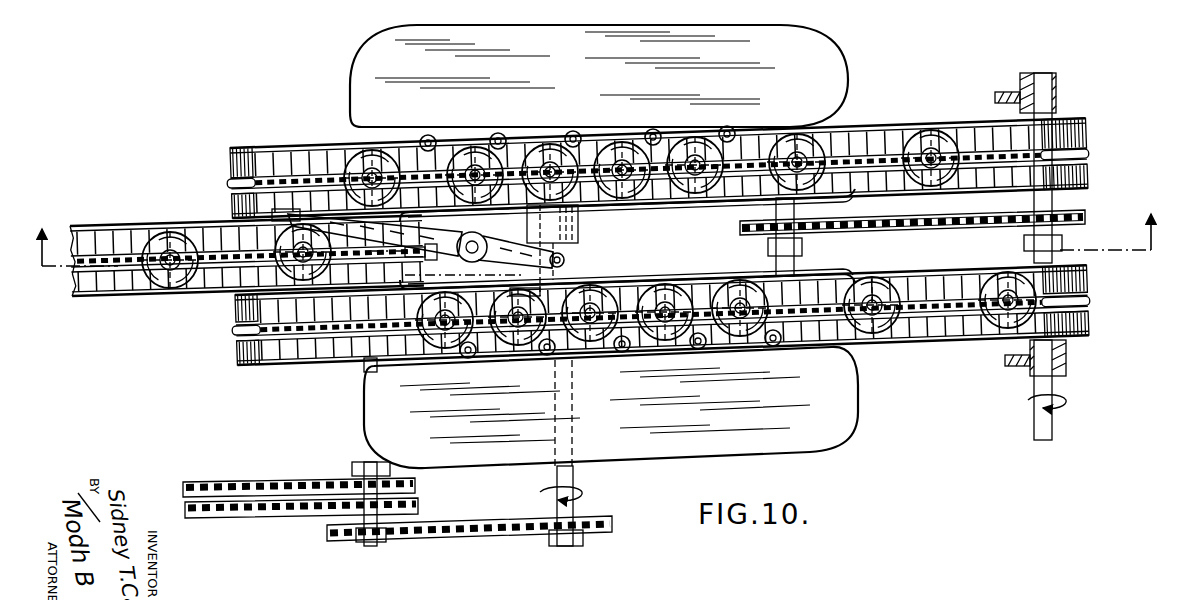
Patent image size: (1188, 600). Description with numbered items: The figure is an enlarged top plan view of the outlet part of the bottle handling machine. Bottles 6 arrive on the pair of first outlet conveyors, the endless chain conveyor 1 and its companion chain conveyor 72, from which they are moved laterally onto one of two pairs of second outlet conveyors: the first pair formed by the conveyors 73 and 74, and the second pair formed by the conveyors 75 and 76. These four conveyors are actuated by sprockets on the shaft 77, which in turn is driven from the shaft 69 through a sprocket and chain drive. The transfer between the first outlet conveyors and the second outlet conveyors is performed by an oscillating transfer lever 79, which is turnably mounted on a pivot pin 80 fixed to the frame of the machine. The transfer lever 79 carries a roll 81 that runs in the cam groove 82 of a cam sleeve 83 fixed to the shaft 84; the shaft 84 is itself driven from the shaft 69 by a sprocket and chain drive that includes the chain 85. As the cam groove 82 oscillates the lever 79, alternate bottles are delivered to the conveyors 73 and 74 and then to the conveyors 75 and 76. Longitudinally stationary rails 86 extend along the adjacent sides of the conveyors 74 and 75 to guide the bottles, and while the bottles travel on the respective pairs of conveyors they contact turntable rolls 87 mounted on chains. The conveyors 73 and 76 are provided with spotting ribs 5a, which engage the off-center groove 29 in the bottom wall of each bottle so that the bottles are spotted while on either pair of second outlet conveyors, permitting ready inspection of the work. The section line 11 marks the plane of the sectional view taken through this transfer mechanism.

The endless chain conveyor 1 is at (98, 230).
The spotting ribs 5a is at (228, 183).
The bottles 6 is at (885, 326).
The section line 11 is at (53, 221).
The groove 29 is at (584, 239).
The shaft 69 is at (370, 546).
The chain conveyor 72 is at (73, 284).
The outlet conveyor 73 is at (240, 147).
The outlet conveyor 74 is at (249, 204).
The outlet conveyor 75 is at (233, 306).
The outlet conveyor 76 is at (233, 348).
The shaft 77 is at (1053, 212).
The oscillating transfer lever 79 is at (291, 156).
The pivot pin 80 is at (478, 243).
The roll 81 is at (566, 262).
The cam groove 82 is at (580, 248).
The cam sleeve 83 is at (583, 225).
The shaft 84 is at (577, 500).
The chain 85 is at (452, 521).
The longitudinally stationary rails 86 is at (672, 198).
The turntable rolls 87 is at (500, 138).